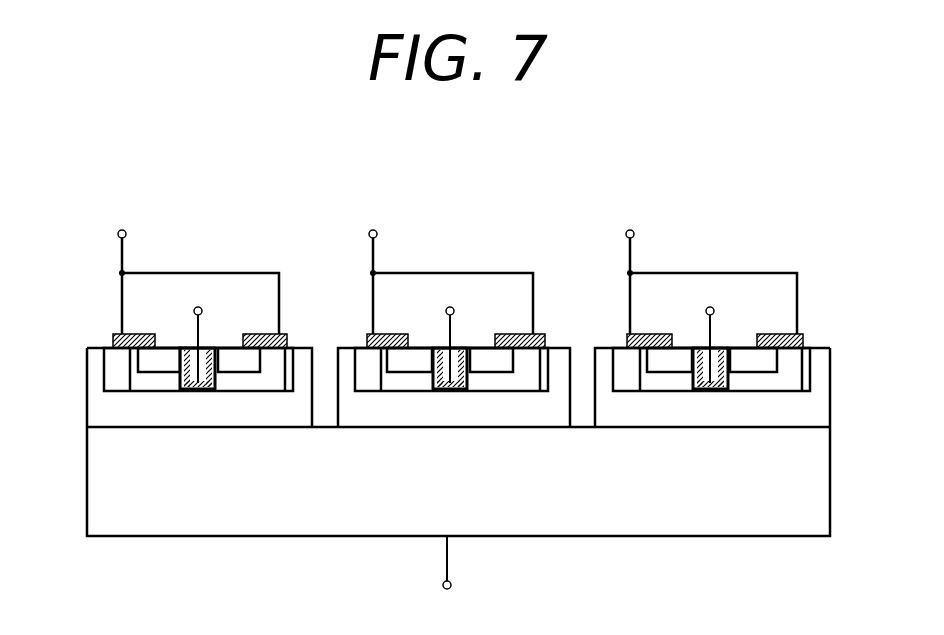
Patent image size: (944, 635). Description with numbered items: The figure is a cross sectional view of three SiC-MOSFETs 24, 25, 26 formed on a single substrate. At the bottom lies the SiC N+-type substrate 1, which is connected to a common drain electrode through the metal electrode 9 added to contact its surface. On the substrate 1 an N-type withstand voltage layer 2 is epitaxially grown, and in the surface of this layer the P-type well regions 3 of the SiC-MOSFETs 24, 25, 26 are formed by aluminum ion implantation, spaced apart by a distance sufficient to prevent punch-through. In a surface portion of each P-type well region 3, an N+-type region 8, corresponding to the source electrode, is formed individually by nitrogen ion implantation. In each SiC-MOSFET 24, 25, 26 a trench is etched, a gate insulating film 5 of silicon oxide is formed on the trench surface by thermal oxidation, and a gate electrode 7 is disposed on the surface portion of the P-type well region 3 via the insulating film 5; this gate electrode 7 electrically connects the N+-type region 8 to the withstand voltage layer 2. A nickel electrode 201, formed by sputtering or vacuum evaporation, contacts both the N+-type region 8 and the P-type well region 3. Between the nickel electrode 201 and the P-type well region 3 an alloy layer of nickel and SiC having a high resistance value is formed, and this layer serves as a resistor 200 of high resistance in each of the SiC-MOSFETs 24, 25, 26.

The N+-type substrate 1 is at (317, 519).
The N-type withstand voltage layer 2 is at (247, 415).
The P-type well region 3 is at (117, 354).
The gate insulating film 5 is at (182, 348).
The gate electrode 7 is at (203, 316).
The N+-type region 8 is at (135, 334).
The metal electrode 9 is at (447, 562).
The SiC-MOSFET 24 is at (228, 260).
The SiC-MOSFET 25 is at (483, 255).
The SiC-MOSFET 26 is at (760, 252).
The resistor 200 is at (132, 392).
The nickel electrode 201 is at (143, 334).